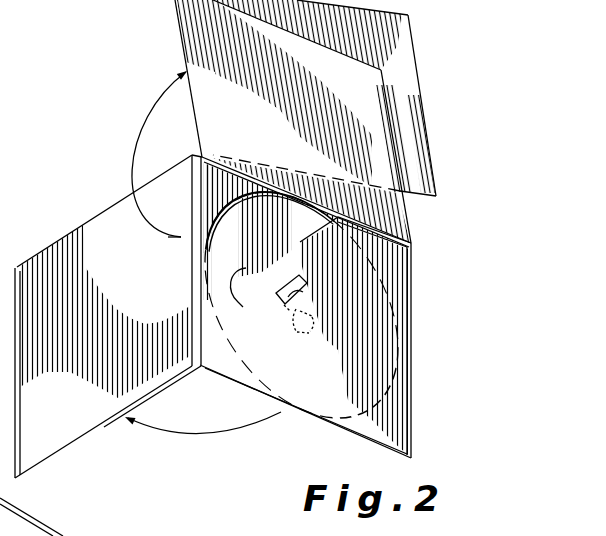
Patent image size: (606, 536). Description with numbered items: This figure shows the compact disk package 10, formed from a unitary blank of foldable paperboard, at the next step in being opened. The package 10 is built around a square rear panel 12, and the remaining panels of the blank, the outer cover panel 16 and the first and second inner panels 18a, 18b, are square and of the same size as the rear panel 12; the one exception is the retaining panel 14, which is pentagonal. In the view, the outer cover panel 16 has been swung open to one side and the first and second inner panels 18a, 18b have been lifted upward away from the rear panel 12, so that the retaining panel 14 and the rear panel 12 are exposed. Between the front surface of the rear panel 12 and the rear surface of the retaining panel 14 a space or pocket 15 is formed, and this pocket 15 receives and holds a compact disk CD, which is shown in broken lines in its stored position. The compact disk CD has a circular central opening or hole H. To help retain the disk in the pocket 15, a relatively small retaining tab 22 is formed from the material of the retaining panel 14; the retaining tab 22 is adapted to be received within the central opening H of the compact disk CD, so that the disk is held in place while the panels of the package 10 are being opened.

The compact disk package 10 is at (433, 341).
The rear panel 12 is at (223, 177).
The retaining panel 14 is at (233, 354).
The pocket 15 is at (245, 295).
The outer cover panel 16 is at (129, 265).
The first inner panel 18a is at (338, 100).
The second inner panel 18b is at (391, 41).
The retaining tab 22 is at (304, 290).
The compact disk CD is at (208, 273).
The central opening H is at (306, 338).